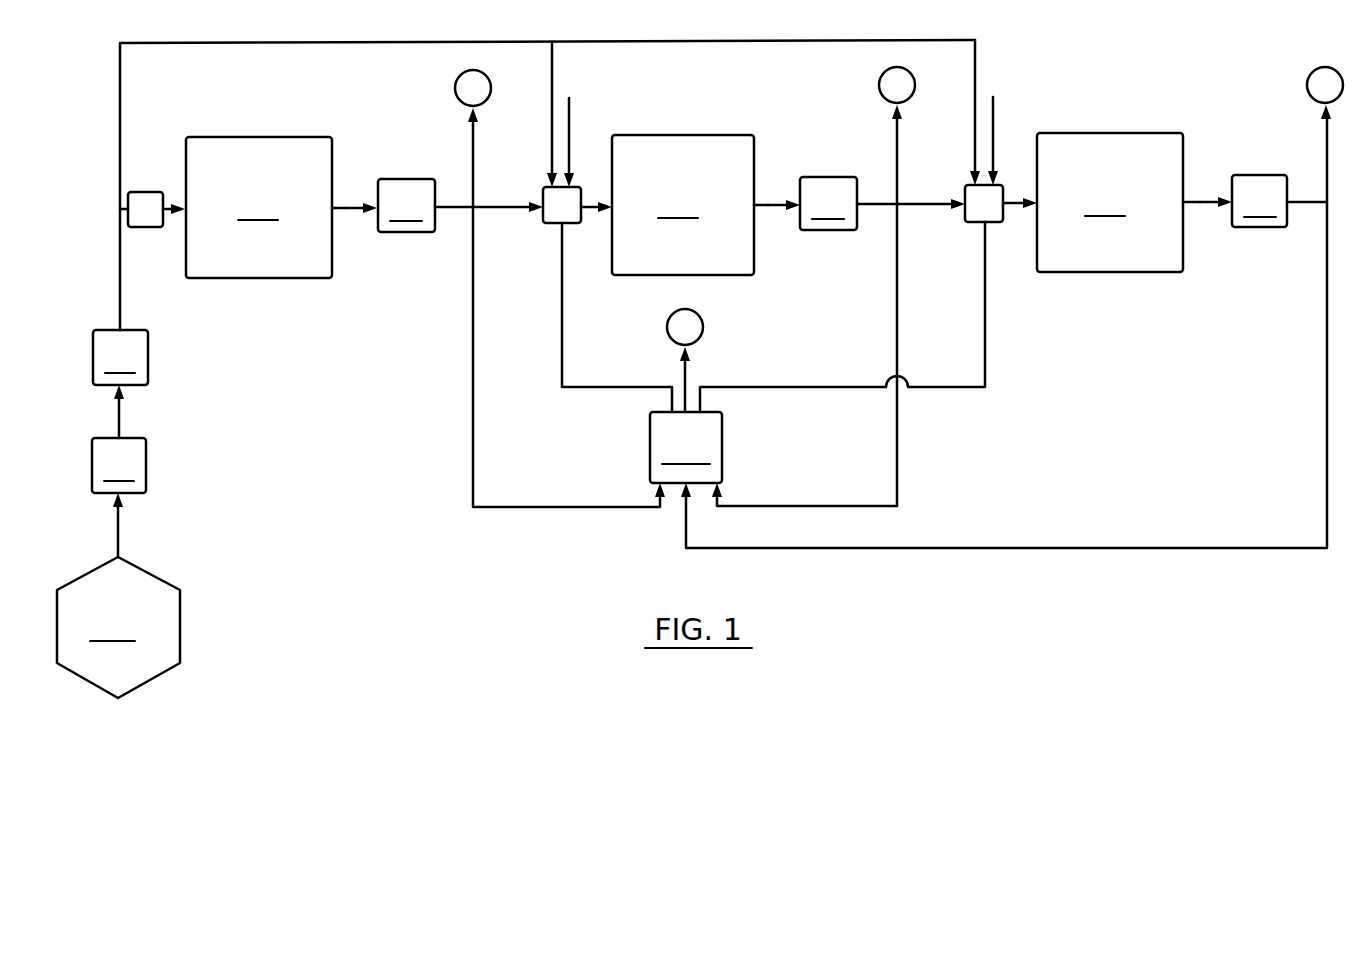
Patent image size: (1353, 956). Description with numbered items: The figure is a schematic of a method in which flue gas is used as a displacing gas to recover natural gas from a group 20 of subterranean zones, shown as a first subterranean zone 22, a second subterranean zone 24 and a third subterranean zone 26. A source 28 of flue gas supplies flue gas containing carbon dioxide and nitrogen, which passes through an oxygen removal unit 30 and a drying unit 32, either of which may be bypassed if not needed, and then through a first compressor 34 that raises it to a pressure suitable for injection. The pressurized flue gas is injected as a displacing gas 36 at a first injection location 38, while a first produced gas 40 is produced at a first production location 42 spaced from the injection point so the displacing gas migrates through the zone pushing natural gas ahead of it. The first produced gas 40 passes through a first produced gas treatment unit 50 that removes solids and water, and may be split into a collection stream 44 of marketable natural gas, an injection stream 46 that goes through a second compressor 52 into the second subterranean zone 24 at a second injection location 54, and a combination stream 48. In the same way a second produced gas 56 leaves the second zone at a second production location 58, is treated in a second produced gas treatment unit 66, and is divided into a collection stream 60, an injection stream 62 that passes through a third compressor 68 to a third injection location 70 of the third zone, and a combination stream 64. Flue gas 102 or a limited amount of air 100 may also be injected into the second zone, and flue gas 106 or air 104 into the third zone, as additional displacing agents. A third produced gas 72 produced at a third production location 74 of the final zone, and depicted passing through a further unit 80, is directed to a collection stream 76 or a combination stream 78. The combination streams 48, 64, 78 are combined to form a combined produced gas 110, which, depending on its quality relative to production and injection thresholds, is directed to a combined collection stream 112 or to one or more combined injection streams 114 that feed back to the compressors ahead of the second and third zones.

The group of subterranean zones 20 is at (547, 380).
The first subterranean zone 22 is at (259, 207).
The second subterranean zone 24 is at (683, 205).
The third subterranean zone 26 is at (1110, 202).
The source of flue gas 28 is at (118, 627).
The oxygen removal unit 30 is at (119, 497).
The drying unit 32 is at (120, 384).
The first compressor 34 is at (141, 178).
The displacing gas 36 is at (164, 144).
The first injection location 38 is at (162, 240).
The first produced gas 40 is at (366, 269).
The first production location 42 is at (352, 137).
The collection stream 44 is at (492, 118).
The injection stream 46 is at (489, 237).
The combination stream 48 is at (525, 313).
The first produced gas treatment unit 50 is at (406, 205).
The second compressor 52 is at (544, 263).
The second injection location 54 is at (591, 240).
The second produced gas 56 is at (792, 245).
The second production location 58 is at (772, 134).
The collection stream 60 is at (921, 114).
The injection stream 62 is at (911, 239).
The combination stream 64 is at (856, 311).
The second produced gas treatment unit 66 is at (828, 203).
The third compressor 68 is at (968, 259).
The third injection location 70 is at (1018, 240).
The third produced gas 72 is at (1224, 260).
The third production location 74 is at (1209, 136).
The collection stream 76 is at (1298, 116).
The combination stream 78 is at (1004, 332).
The exhaust filter 80 is at (1259, 201).
The air 100 is at (619, 141).
The flue gas 102 is at (606, 114).
The air 104 is at (1047, 140).
The flue gas 106 is at (1036, 112).
The combined produced gas 110 is at (686, 447).
The combined collection stream 112 is at (736, 360).
The combined injection streams 114 is at (827, 317).